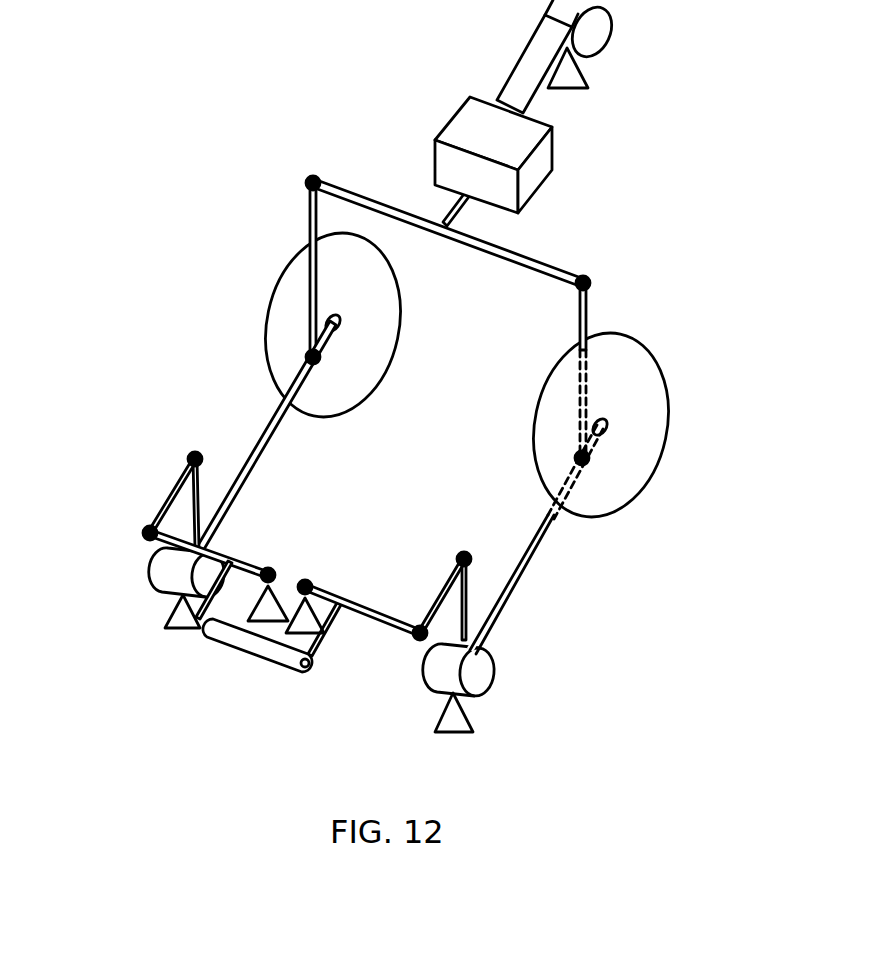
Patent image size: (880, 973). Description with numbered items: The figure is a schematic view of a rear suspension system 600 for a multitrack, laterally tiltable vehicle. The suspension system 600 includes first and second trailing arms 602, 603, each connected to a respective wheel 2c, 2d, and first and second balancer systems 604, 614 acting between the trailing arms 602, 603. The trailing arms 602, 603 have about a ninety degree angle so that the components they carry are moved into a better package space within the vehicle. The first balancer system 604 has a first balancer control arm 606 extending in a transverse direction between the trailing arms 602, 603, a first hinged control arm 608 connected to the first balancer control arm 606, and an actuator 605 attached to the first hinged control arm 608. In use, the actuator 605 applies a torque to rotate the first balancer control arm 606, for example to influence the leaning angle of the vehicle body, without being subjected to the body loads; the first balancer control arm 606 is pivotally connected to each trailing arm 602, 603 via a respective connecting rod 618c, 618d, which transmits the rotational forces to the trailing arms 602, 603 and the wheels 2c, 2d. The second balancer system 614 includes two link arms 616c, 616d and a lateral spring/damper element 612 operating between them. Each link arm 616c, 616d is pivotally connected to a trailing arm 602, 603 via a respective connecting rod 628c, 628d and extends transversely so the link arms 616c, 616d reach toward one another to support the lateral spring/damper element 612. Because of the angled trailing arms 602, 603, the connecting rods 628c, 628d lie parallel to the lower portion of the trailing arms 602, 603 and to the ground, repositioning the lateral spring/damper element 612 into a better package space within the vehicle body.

The rear suspension system 600 is at (172, 155).
The first balancer system 604 is at (598, 158).
The actuator 605 is at (452, 114).
The first hinged control arm 608 is at (525, 53).
The first balancer control arm 606 is at (525, 253).
The connecting rod 618c is at (307, 222).
The connecting rod 618d is at (587, 318).
The wheel 2c is at (277, 303).
The wheel 2d is at (670, 395).
The first trailing arm 602 is at (203, 480).
The second trailing arm 603 is at (472, 580).
The connecting rod 628c is at (167, 498).
The connecting rod 628d is at (440, 587).
The link arm 616c is at (160, 555).
The link arm 616d is at (385, 627).
The lateral spring/damper element 612 is at (240, 652).
The second balancer system 614 is at (253, 683).